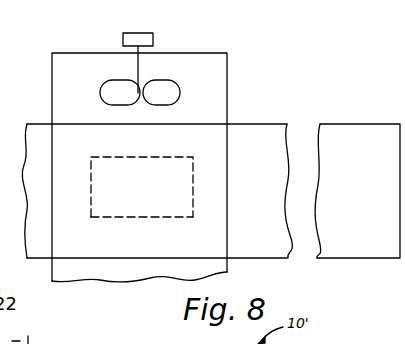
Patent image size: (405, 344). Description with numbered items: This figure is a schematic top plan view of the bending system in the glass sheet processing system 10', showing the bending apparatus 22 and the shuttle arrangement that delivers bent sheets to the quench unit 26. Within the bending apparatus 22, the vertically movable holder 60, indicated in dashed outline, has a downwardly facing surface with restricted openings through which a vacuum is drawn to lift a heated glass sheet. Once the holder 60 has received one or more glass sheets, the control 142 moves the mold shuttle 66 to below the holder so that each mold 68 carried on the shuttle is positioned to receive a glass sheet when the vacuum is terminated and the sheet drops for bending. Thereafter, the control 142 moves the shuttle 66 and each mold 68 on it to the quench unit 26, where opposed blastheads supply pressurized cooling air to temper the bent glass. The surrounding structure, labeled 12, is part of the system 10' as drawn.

The system 10' is at (205, 148).
The base plate 12 is at (292, 118).
The quench unit 26 is at (52, 65).
The control 142 is at (153, 35).
The mold shuttle 66 is at (150, 85).
The mold 68 is at (142, 92).
The holder 60 is at (194, 172).
The bending apparatus 22 is at (193, 218).